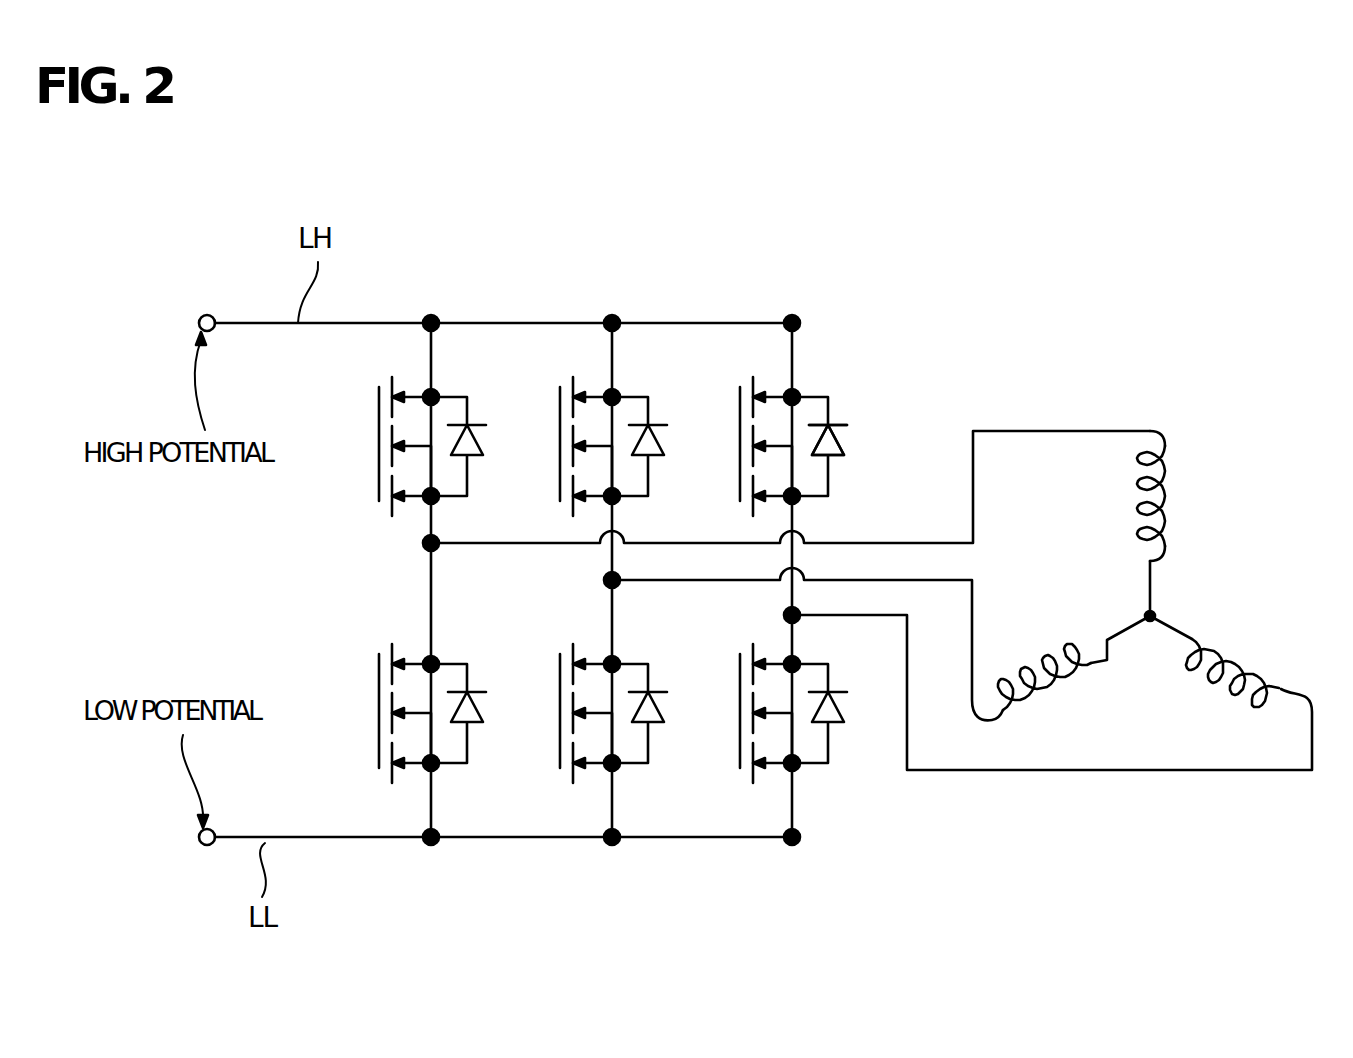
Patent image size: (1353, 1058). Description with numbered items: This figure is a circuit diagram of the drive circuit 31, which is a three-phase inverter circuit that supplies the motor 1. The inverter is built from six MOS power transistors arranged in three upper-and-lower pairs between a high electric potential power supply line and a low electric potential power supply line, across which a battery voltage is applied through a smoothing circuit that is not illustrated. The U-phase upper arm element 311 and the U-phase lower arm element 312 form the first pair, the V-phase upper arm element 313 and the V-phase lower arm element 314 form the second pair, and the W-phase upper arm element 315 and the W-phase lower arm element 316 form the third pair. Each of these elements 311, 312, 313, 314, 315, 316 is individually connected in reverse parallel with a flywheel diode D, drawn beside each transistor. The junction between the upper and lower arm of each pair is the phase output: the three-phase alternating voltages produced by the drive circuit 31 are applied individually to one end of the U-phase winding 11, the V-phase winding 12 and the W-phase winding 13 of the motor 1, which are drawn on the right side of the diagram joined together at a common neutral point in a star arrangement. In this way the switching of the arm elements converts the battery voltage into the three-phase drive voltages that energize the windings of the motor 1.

The motor 1 is at (1257, 418).
The U-phase winding 11 is at (1167, 498).
The V-phase winding 12 is at (1030, 678).
The W-phase winding 13 is at (1230, 670).
The drive circuit 31 is at (627, 243).
The U-phase upper arm element 311 is at (378, 445).
The U-phase lower arm element 312 is at (378, 735).
The V-phase upper arm element 313 is at (558, 445).
The V-phase lower arm element 314 is at (558, 735).
The W-phase upper arm element 315 is at (738, 445).
The W-phase lower arm element 316 is at (738, 735).
The flywheel diode D is at (843, 438).